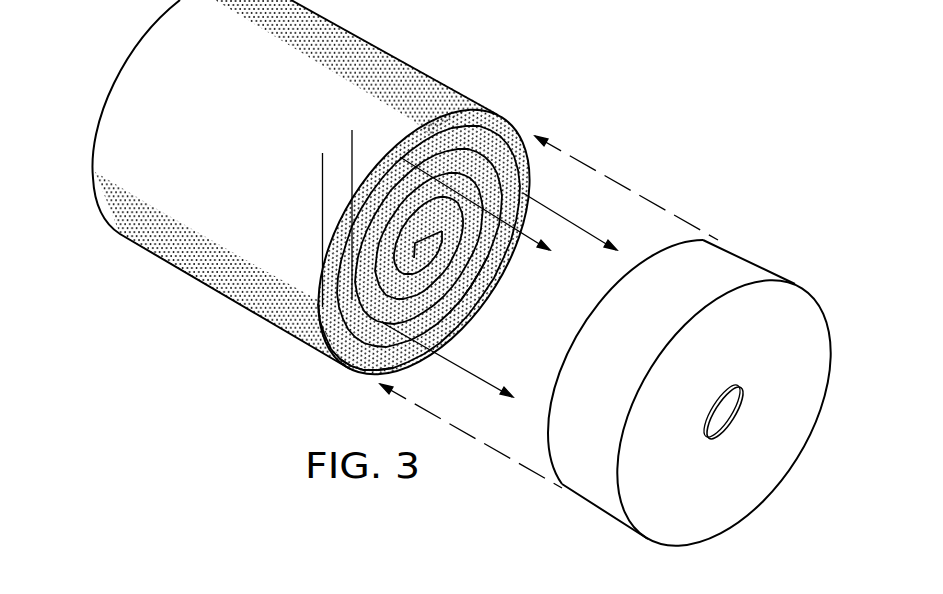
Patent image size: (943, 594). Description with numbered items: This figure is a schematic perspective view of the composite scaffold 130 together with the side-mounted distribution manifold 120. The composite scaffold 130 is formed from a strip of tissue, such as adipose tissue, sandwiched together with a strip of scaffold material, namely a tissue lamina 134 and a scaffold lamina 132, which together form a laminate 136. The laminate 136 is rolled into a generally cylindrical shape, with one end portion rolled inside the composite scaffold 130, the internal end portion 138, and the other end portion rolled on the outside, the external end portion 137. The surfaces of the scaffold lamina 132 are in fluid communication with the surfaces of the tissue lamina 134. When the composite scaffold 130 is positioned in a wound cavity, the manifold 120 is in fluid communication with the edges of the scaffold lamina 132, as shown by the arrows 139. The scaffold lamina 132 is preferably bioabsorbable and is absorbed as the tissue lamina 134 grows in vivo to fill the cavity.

The distribution manifold 120 is at (767, 272).
The composite scaffold 130 is at (394, 55).
The scaffold lamina 132 is at (363, 360).
The tissue lamina 134 is at (484, 143).
The laminate 136 is at (387, 130).
The external end portion 137 is at (475, 328).
The internal end portion 138 is at (442, 226).
The arrows 139 is at (565, 212).